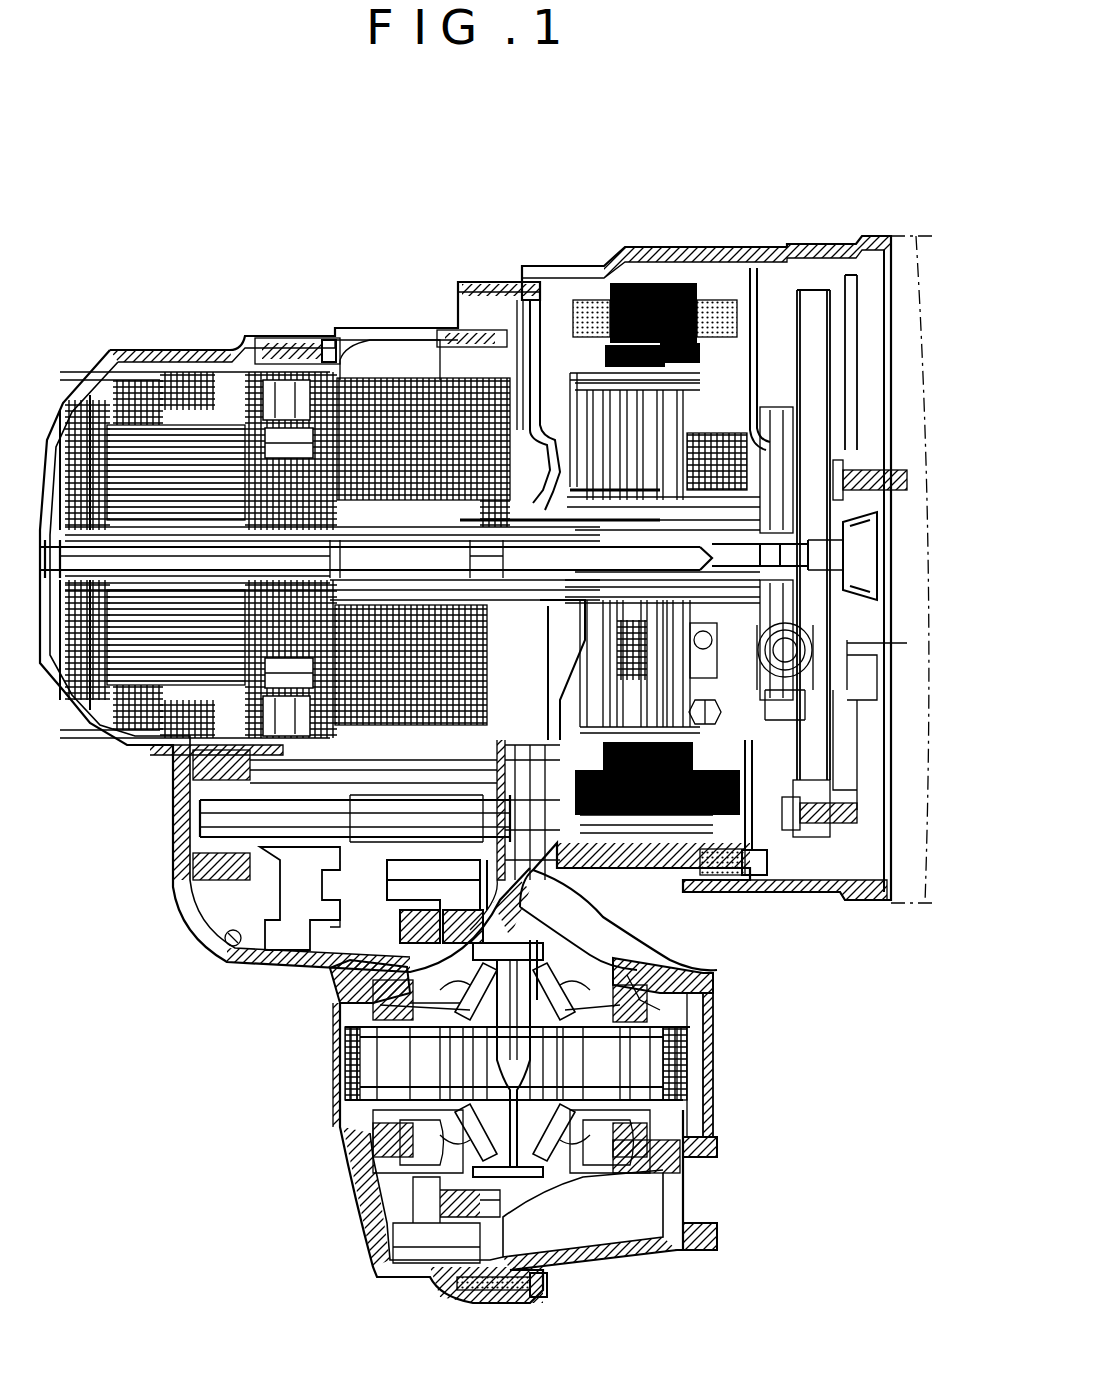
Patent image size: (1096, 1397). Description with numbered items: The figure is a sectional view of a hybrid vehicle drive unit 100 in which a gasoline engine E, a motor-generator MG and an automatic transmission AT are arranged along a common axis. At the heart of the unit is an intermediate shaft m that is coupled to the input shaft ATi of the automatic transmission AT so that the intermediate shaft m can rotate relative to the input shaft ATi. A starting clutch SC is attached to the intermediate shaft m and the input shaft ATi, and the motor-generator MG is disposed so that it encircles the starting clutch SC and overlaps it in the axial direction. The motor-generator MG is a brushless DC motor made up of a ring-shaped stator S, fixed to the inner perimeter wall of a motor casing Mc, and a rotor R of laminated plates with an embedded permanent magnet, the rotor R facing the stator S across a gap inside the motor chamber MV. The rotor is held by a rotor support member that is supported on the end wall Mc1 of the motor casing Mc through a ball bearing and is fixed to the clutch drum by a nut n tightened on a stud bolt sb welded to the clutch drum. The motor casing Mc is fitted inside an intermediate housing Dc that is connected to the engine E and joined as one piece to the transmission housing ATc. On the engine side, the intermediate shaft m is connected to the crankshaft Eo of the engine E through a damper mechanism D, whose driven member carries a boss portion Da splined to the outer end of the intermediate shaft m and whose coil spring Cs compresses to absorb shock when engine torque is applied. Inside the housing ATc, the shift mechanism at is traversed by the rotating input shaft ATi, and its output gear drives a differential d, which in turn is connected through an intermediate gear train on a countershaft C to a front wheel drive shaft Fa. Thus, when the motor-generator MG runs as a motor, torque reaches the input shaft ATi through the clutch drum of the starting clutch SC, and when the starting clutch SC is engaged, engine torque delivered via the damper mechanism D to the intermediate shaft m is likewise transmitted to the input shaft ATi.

The hybrid vehicle drive unit 100 is at (256, 240).
The automatic transmission AT is at (229, 332).
The shift mechanism at is at (108, 360).
The transmission housing ATc is at (340, 332).
The input shaft ATi is at (567, 596).
The rotor R is at (465, 314).
The starting clutch SC is at (593, 353).
The motor chamber MV is at (560, 300).
The stator S is at (623, 246).
The motor-generator MG is at (665, 240).
The motor casing Mc is at (688, 262).
The end wall Mc1 is at (752, 268).
The damper mechanism D is at (800, 240).
The intermediate housing Dc is at (862, 232).
The gasoline engine E is at (907, 233).
The crankshaft Eo is at (873, 690).
The boss portion Da is at (812, 592).
The coil spring Cs is at (804, 650).
The intermediate shaft m is at (753, 575).
The nut n is at (720, 710).
The stud bolt sb is at (713, 770).
The countershaft C is at (215, 815).
The differential d is at (347, 1190).
The front wheel drive shaft Fa is at (688, 1076).